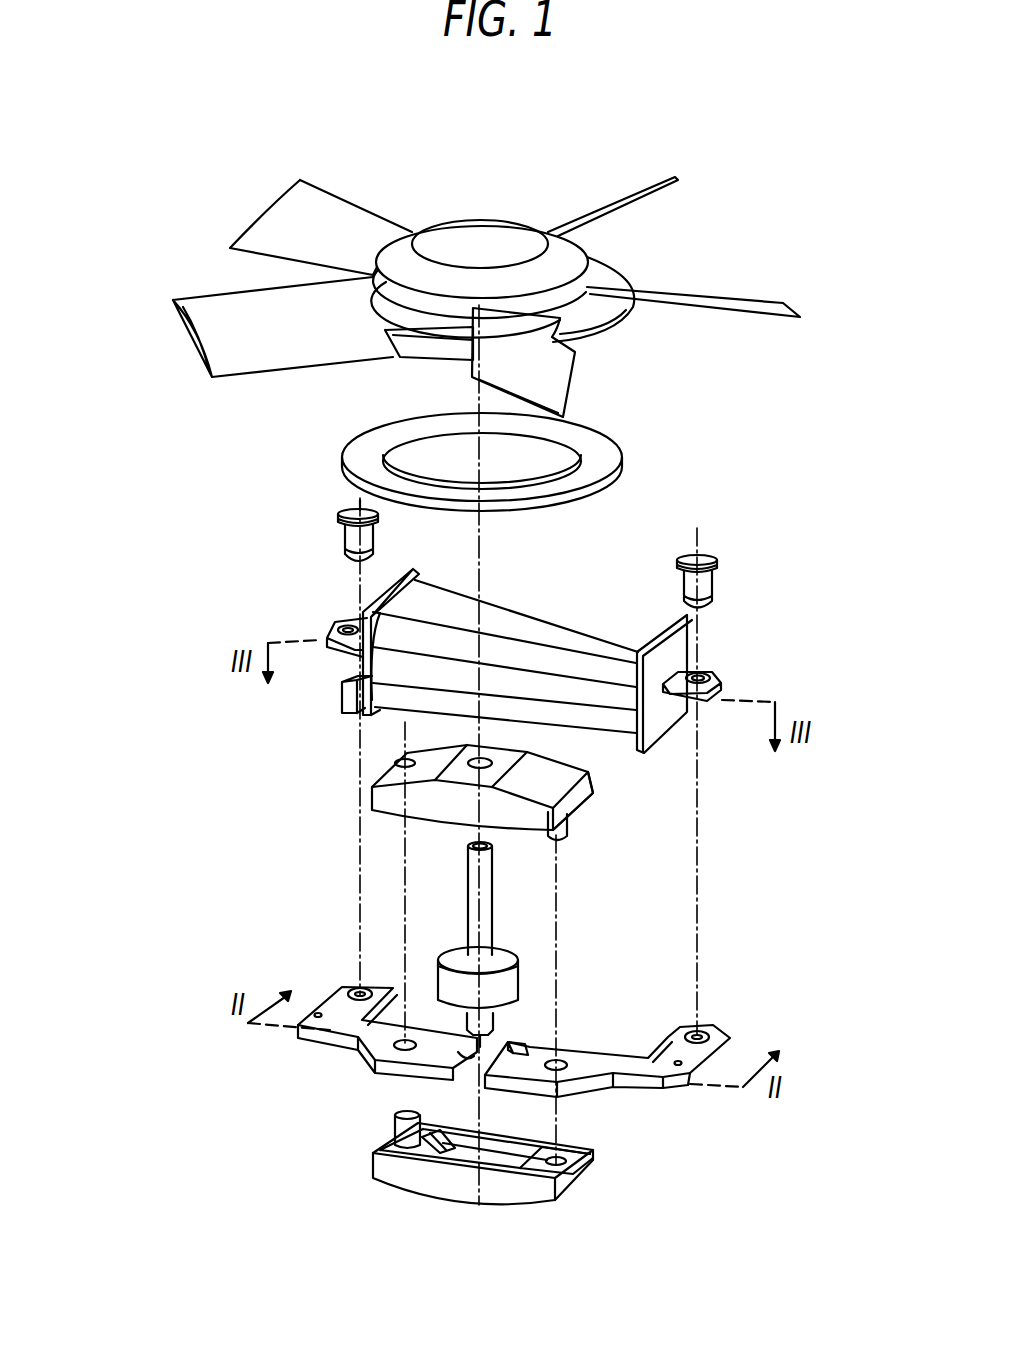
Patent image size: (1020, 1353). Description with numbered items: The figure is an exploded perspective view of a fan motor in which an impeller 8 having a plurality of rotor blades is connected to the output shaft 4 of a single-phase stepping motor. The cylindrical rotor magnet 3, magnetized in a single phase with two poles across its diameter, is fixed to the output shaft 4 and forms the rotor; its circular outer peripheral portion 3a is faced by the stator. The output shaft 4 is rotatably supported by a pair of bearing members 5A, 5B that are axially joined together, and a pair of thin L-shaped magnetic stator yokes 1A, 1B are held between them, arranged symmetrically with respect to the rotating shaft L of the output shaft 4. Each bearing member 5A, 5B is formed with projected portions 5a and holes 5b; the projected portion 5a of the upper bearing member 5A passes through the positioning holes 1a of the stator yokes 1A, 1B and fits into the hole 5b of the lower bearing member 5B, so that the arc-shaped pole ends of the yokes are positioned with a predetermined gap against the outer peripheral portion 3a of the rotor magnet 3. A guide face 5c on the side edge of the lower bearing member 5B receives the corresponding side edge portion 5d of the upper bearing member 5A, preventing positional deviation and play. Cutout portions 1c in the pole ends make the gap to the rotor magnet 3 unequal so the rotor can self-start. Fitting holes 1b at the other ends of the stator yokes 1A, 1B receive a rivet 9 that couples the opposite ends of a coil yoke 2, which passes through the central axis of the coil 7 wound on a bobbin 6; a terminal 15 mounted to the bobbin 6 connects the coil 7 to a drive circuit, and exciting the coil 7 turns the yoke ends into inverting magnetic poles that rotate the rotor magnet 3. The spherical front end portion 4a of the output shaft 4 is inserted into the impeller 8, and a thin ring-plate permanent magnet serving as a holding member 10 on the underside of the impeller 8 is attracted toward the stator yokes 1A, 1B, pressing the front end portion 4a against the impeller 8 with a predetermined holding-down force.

The impeller 8 is at (360, 222).
The holding member 10 is at (605, 462).
The rivet 9 is at (342, 546).
The rotating shaft L is at (483, 573).
The coil 7 is at (576, 620).
The bobbin 6 is at (673, 644).
The coil yoke 2 is at (716, 666).
The terminal 15 is at (343, 705).
The bearing member 5A is at (484, 975).
The hole 5b is at (396, 765).
The side edge portion 5d is at (595, 797).
The projected portion 5a is at (570, 838).
The output shaft 4 is at (475, 893).
The front end portion 4a is at (468, 877).
The rotor magnet 3 is at (493, 965).
The outer peripheral portion 3a is at (520, 981).
The stator yoke 1A is at (316, 1013).
The stator yoke 1B is at (677, 1061).
The positioning hole 1a is at (372, 1062).
The fitting hole 1b is at (356, 988).
The cutout portion 1c is at (455, 1055).
The bearing member 5B is at (524, 1194).
The guide face 5c is at (597, 1140).